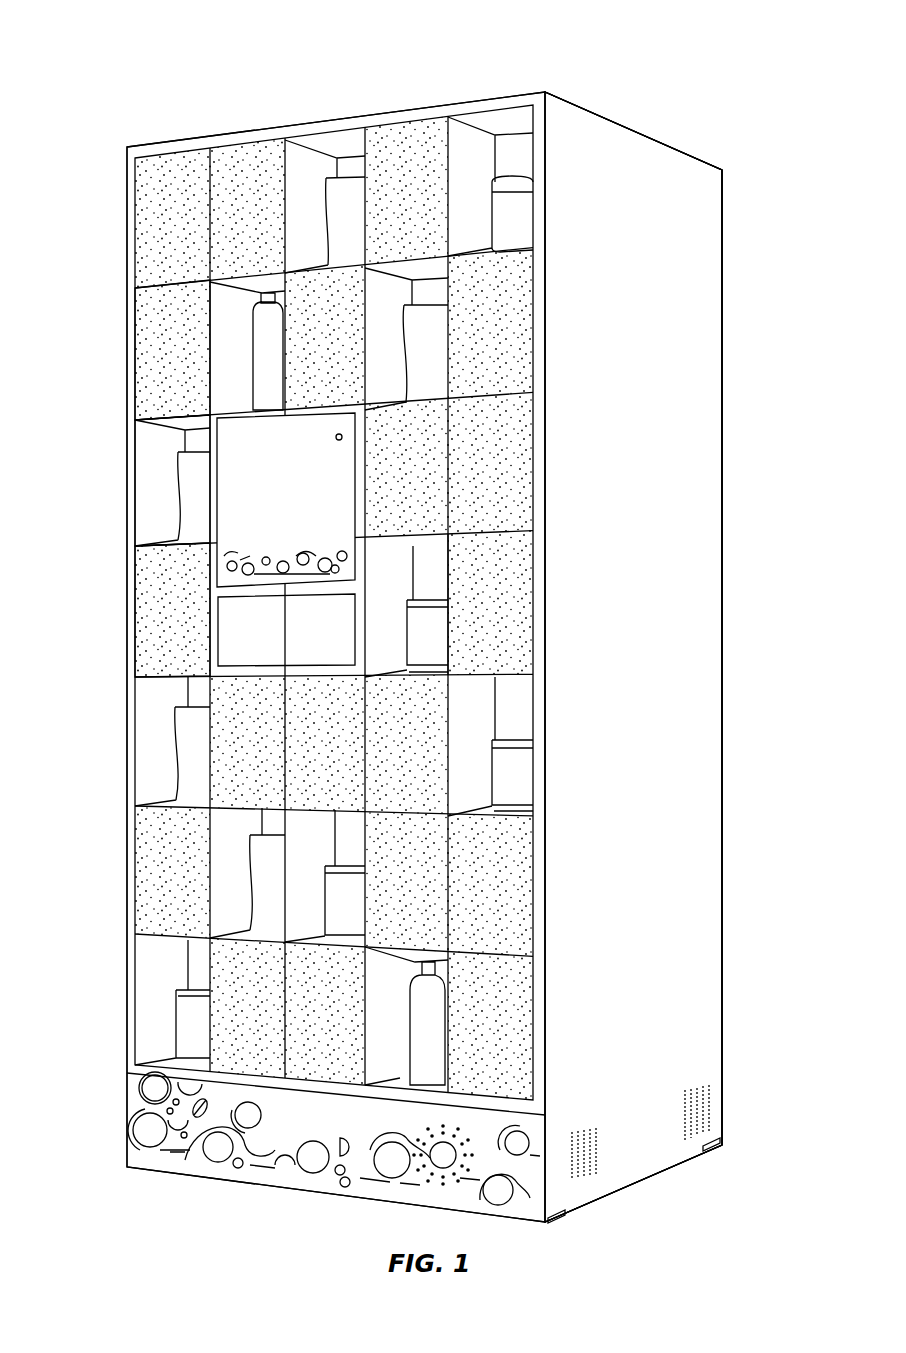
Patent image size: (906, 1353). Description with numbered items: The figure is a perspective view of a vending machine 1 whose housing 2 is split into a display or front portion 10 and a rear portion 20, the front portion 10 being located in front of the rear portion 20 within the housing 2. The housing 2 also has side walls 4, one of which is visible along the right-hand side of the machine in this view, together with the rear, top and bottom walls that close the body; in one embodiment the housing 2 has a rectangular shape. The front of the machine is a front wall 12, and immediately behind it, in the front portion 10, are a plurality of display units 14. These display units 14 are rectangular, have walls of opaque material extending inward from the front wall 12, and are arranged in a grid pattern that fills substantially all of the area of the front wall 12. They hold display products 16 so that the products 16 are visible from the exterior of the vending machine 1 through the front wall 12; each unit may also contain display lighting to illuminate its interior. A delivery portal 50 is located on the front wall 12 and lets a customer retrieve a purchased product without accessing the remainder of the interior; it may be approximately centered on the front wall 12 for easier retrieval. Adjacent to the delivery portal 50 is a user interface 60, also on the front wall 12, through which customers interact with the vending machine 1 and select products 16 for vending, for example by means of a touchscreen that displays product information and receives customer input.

The vending machine 1 is at (737, 130).
The housing 2 is at (621, 123).
The side walls 4 is at (677, 870).
The front portion 10 is at (160, 212).
The front wall 12 is at (448, 568).
The display units 14 is at (145, 345).
The products 16 is at (345, 188).
The rear portion 20 is at (687, 322).
The delivery portal 50 is at (240, 632).
The user interface 60 is at (235, 520).